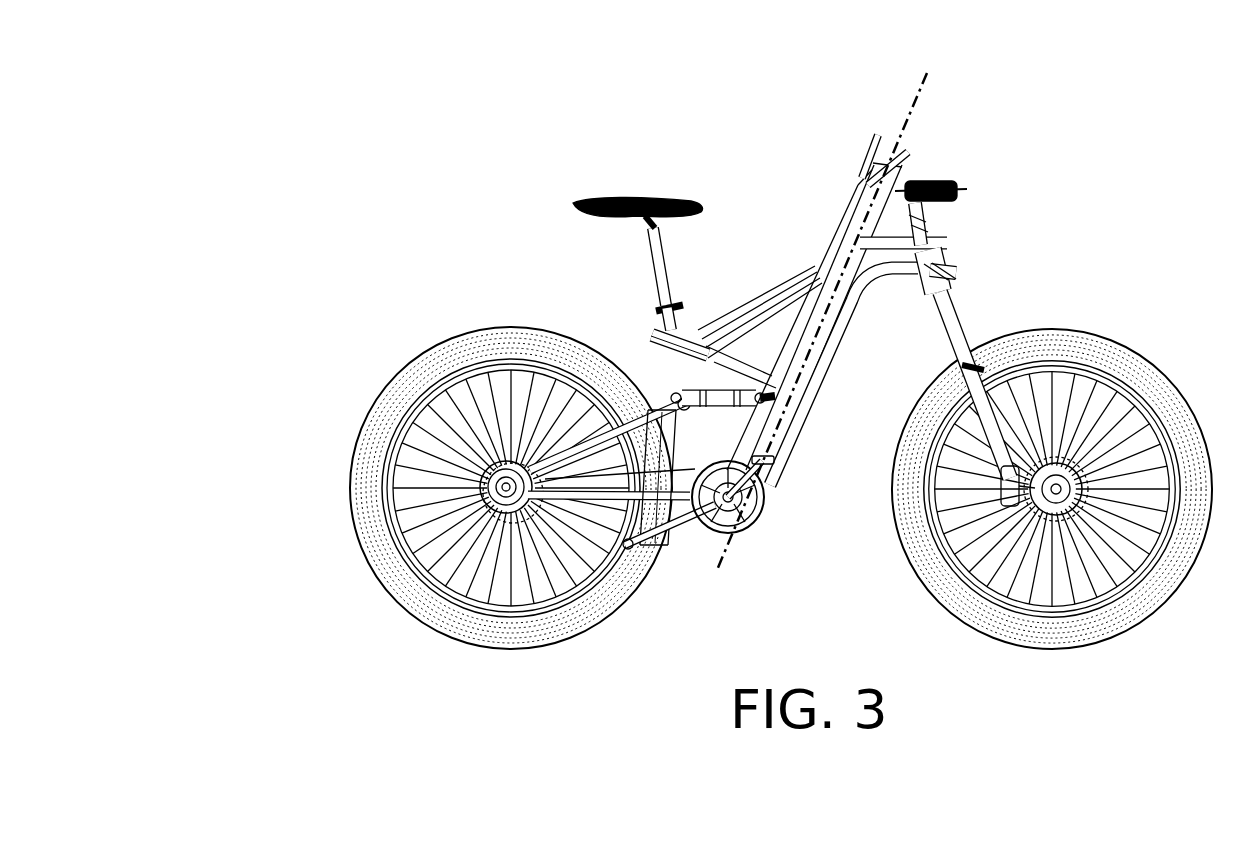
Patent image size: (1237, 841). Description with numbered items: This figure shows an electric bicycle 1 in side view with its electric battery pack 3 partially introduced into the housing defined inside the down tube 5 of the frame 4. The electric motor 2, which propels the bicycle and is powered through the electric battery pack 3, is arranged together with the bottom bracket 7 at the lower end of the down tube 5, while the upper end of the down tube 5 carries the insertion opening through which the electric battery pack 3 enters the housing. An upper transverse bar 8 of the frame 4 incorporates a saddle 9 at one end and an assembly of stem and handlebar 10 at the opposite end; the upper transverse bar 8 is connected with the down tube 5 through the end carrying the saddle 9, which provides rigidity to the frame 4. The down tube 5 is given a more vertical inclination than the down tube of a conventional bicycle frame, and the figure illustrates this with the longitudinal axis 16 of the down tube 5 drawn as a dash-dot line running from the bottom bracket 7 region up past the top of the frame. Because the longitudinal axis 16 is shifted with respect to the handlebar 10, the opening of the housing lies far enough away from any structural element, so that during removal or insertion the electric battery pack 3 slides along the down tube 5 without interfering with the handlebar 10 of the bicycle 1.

The electric bicycle 1 is at (724, 359).
The electric motor 2 is at (696, 439).
The electric battery pack 3 is at (835, 240).
The frame 4 is at (868, 376).
The down tube 5 is at (800, 393).
The bottom bracket 7 is at (757, 470).
The upper transverse bar 8 is at (758, 305).
The saddle 9 is at (630, 203).
The assembly of stem and handlebar 10 is at (943, 177).
The longitudinal axis 16 is at (920, 87).